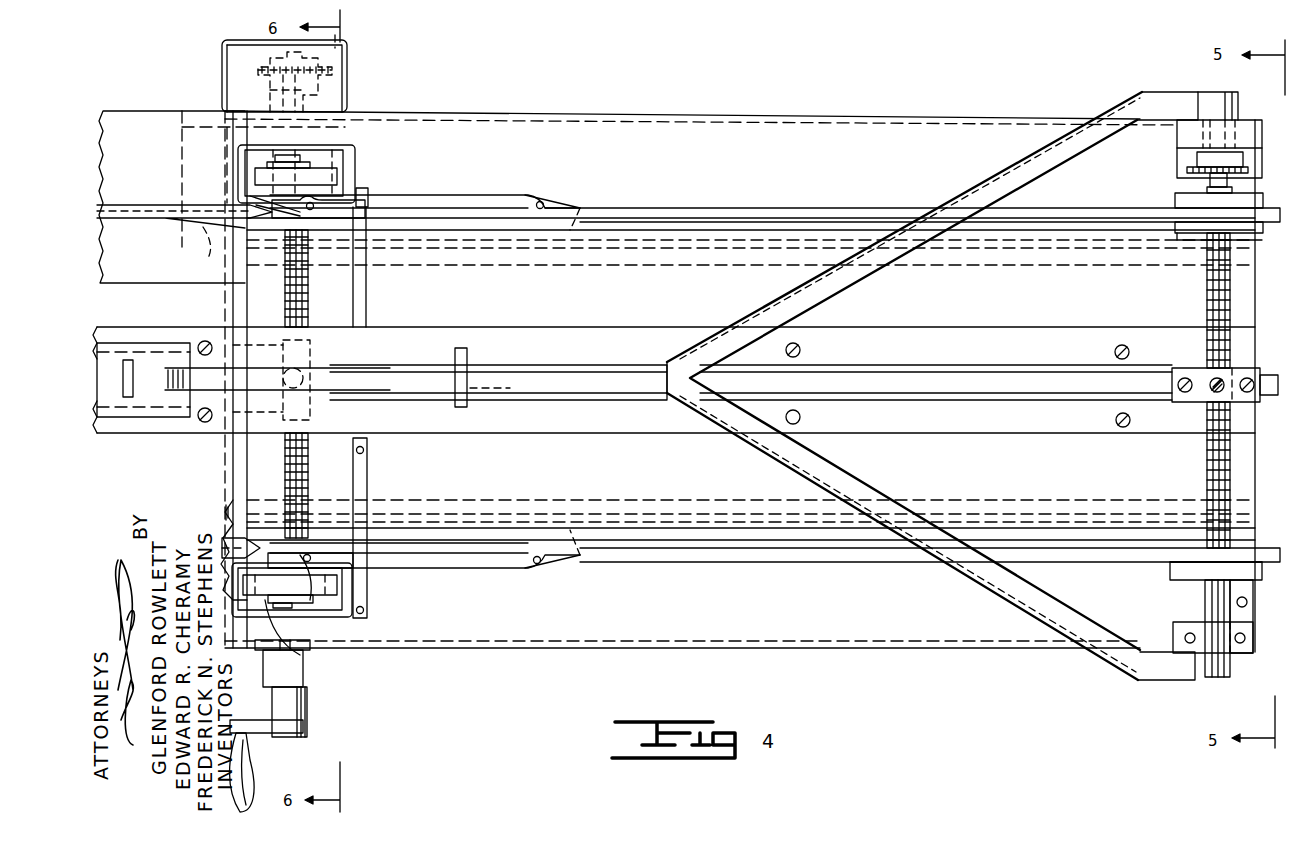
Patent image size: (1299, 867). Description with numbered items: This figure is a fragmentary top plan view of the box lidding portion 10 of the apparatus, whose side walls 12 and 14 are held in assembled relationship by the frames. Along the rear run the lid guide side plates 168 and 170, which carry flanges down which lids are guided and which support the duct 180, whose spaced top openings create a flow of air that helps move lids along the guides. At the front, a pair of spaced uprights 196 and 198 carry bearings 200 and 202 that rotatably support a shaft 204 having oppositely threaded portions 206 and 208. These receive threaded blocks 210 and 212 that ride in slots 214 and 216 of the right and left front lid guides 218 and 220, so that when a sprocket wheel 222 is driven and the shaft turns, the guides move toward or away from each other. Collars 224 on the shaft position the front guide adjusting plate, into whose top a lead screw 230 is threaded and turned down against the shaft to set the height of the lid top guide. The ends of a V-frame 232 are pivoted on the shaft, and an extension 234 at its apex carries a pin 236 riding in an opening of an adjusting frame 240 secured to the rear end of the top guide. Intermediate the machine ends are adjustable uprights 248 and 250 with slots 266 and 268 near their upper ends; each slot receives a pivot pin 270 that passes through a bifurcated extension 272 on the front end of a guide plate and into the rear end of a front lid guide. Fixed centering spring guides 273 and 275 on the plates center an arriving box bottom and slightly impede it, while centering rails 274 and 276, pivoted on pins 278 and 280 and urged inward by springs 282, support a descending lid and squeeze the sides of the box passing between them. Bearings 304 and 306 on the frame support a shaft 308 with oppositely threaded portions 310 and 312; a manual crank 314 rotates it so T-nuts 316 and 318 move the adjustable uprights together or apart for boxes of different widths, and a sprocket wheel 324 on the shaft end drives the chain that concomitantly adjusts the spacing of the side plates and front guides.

The box lidding portion 10 is at (540, 672).
The side wall 12 is at (902, 112).
The side wall 14 is at (876, 650).
The lid guide side plate 168 is at (215, 205).
The lid guide side plate 170 is at (230, 538).
The duct 180 is at (172, 327).
The upright 196 is at (1180, 135).
The upright 198 is at (1250, 640).
The bearing 200 is at (1228, 130).
The bearing 202 is at (1225, 655).
The shaft 204 is at (1205, 598).
The threaded portion 206 is at (1210, 306).
The threaded portion 208 is at (1210, 460).
The threaded block 210 is at (1195, 233).
The threaded block 212 is at (1188, 548).
The slot 214 is at (1130, 221).
The slot 216 is at (1120, 555).
The right front lid guide 218 is at (822, 208).
The left front lid guide 220 is at (858, 562).
The sprocket wheel 222 is at (1186, 170).
The collar 224 is at (1180, 368).
The lead screw 230 is at (1210, 393).
The V-frame 232 is at (872, 478).
The extension 234 is at (622, 400).
The pin 236 is at (455, 405).
The adjusting frame 240 is at (490, 400).
The adjustable upright 248 is at (330, 592).
The adjustable upright 250 is at (340, 180).
The slot 266 is at (318, 606).
The slot 268 is at (335, 150).
The pivot pin 270 is at (275, 160).
The bifurcated extension 272 is at (262, 205).
The centering spring guide 273 is at (199, 260).
The centering rail 274 is at (472, 195).
The centering spring guide 275 is at (246, 512).
The centering rail 276 is at (468, 568).
The pin 278 is at (550, 200).
The pin 280 is at (545, 568).
The spring 282 is at (365, 190).
The bearing 304 is at (305, 690).
The bearing 306 is at (330, 100).
The shaft 308 is at (322, 82).
The threaded portion 310 is at (310, 498).
The threaded portion 312 is at (310, 312).
The crank 314 is at (255, 745).
The T-nut 316 is at (330, 600).
The T-nut 318 is at (300, 158).
The sprocket wheel 324 is at (338, 62).